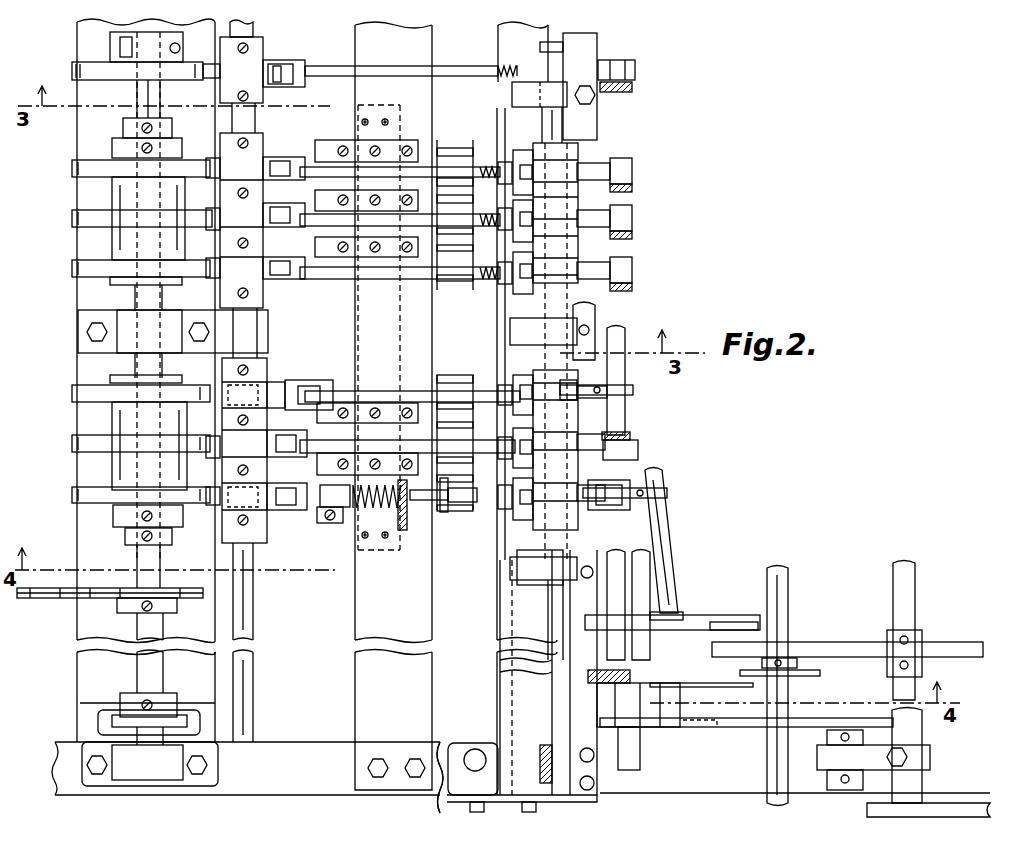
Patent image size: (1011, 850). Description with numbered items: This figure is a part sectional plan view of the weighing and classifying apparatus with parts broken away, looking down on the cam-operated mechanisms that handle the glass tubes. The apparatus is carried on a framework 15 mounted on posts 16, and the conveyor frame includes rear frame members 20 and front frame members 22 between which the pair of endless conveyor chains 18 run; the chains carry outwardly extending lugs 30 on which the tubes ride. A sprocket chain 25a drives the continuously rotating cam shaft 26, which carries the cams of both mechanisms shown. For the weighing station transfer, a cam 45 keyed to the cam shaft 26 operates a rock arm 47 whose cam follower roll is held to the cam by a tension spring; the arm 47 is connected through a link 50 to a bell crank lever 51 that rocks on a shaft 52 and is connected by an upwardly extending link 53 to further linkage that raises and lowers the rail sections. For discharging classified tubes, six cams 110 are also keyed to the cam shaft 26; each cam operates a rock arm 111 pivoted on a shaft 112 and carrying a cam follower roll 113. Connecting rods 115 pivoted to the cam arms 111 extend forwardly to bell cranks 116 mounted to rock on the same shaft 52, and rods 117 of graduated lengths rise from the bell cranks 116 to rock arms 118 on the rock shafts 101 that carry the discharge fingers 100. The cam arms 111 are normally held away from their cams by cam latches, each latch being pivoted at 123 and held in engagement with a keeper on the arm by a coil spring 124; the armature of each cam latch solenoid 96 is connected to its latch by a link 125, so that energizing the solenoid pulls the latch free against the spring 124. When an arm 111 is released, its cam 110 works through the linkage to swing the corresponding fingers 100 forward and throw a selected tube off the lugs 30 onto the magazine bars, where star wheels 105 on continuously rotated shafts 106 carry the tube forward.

The framework 15 is at (326, 730).
The posts 16 is at (478, 750).
The endless conveyor chains 18 is at (762, 663).
The rear frame members 20 is at (148, 96).
The front frame members 22 is at (540, 630).
The sprocket chain 25a is at (42, 598).
The cam shaft 26 is at (145, 625).
The lugs 30 is at (735, 689).
The cam 45 is at (74, 68).
The rock arm 47 is at (300, 60).
The link 50 is at (406, 68).
The bell crank lever 51 is at (600, 62).
The shaft 52 is at (548, 128).
The link 53 is at (614, 93).
The cam latch solenoids 96 is at (458, 288).
The discharge fingers 100 is at (745, 625).
The rock shafts 101 is at (665, 553).
The star wheels 105 is at (818, 672).
The shafts 106 is at (780, 628).
The cams 110 is at (72, 218).
The rock arms 111 is at (284, 157).
The shaft 112 is at (250, 588).
The cam follower roll 113 is at (206, 170).
The connecting rods 115 is at (387, 265).
The bell cranks 116 is at (604, 180).
The rods 117 is at (633, 190).
The rock arms 118 is at (633, 390).
The latch pivot 123 is at (325, 523).
The coil spring 124 is at (380, 508).
The link 125 is at (425, 522).